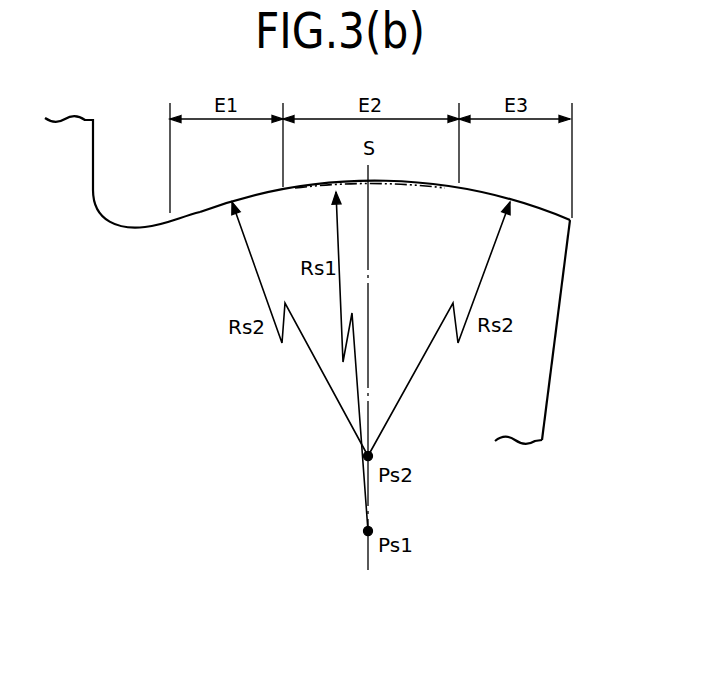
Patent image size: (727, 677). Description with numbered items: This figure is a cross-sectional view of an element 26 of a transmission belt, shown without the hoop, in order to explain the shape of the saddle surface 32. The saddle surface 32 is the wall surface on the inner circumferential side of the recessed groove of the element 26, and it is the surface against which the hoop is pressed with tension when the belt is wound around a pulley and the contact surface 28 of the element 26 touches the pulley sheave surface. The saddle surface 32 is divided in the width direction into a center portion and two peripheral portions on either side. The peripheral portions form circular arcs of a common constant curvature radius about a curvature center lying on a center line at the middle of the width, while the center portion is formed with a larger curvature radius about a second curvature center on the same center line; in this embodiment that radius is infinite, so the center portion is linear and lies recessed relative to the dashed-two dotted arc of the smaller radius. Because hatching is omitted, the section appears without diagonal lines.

The saddle surface 32 is at (540, 180).
The element 26 is at (546, 290).
The contact surface 28 is at (548, 402).